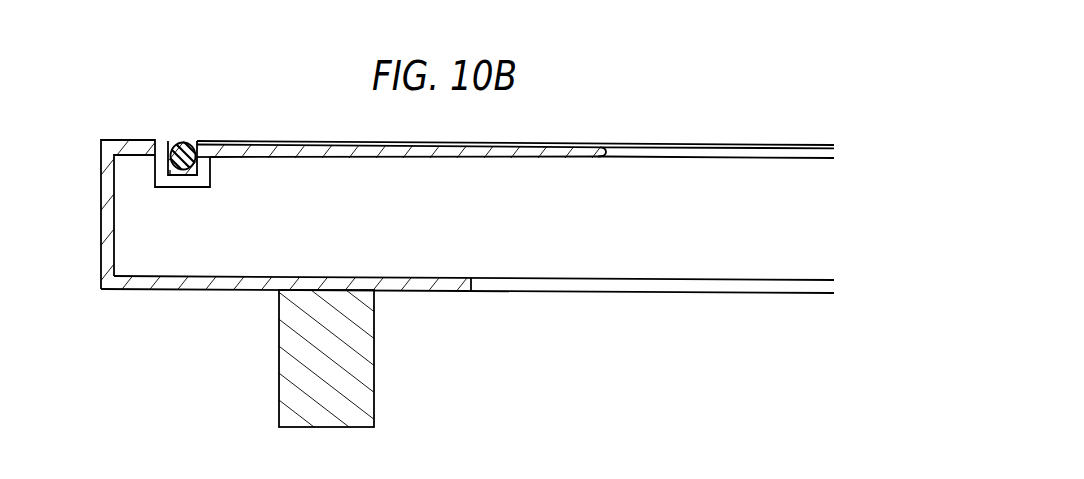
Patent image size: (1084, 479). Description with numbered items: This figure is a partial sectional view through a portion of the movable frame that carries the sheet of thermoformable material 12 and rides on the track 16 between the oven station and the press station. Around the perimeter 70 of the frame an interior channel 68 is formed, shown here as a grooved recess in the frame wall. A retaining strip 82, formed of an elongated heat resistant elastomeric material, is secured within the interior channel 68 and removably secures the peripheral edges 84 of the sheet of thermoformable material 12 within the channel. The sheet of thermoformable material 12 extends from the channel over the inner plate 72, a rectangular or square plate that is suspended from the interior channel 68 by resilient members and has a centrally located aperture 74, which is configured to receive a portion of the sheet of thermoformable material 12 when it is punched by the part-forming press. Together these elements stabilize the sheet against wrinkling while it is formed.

The sheet of thermoformable material 12 is at (700, 144).
The track 16 is at (279, 357).
The interior channel 68 is at (201, 129).
The perimeter 70 is at (223, 152).
The inner plate 72 is at (515, 158).
The aperture 74 is at (606, 157).
The retaining strip 82 is at (183, 140).
The peripheral edges 84 is at (168, 142).